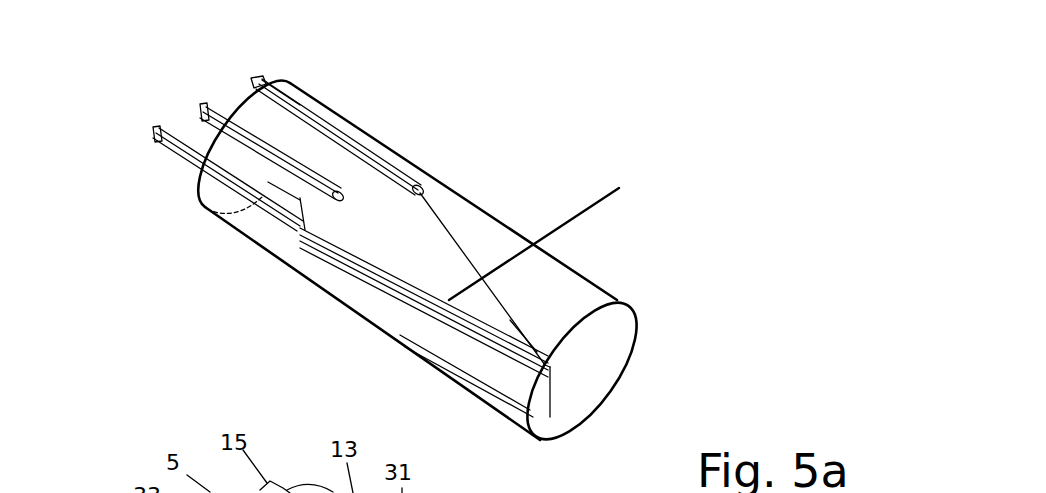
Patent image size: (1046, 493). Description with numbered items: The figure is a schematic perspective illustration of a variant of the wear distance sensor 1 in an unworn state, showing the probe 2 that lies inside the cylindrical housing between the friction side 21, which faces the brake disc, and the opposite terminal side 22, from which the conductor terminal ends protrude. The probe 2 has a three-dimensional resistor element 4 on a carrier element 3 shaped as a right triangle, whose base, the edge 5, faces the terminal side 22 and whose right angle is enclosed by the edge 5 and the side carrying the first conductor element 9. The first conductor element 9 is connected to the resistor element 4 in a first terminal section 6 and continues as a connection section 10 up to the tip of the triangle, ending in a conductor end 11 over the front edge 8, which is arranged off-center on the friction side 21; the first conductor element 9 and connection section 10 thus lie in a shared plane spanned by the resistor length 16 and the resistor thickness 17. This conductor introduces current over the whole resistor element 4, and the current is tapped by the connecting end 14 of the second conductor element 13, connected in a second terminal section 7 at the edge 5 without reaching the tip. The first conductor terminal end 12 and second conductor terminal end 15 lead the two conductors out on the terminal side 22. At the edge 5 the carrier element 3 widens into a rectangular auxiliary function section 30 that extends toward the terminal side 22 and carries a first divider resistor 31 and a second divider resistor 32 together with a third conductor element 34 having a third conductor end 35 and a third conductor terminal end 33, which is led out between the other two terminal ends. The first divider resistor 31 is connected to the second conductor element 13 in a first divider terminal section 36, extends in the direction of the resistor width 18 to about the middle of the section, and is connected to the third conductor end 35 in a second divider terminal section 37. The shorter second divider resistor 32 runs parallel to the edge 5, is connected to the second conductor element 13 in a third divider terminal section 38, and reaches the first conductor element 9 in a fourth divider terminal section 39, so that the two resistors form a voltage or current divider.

The wear distance sensor 1 is at (130, 206).
The probe 2 is at (480, 236).
The carrier element 3 is at (545, 410).
The resistor element 4 is at (510, 320).
The edge 5 is at (332, 190).
The first terminal section 6 is at (543, 238).
The second terminal section 7 is at (421, 188).
The front edge 8 is at (552, 394).
The first conductor element 9 is at (290, 162).
The connection section 10 is at (473, 303).
The conductor end 11 is at (550, 368).
The first conductor terminal end 12 is at (155, 131).
The second conductor element 13 is at (323, 143).
The connecting end 14 is at (422, 190).
The second conductor terminal end 15 is at (255, 76).
The resistor length 16 is at (527, 440).
The resistor thickness 17 is at (649, 289).
The resistor width 18 is at (486, 174).
The friction side 21 is at (641, 328).
The terminal side 22 is at (203, 184).
The auxiliary function section 30 is at (298, 247).
The first divider resistor 31 is at (367, 205).
The second divider resistor 32 is at (410, 172).
The third conductor terminal end 33 is at (200, 107).
The third conductor element 34 is at (273, 160).
The third conductor end 35 is at (308, 202).
The first divider terminal section 36 is at (378, 150).
The second divider terminal section 37 is at (303, 190).
The third divider terminal section 38 is at (428, 181).
The fourth divider terminal section 39 is at (252, 282).